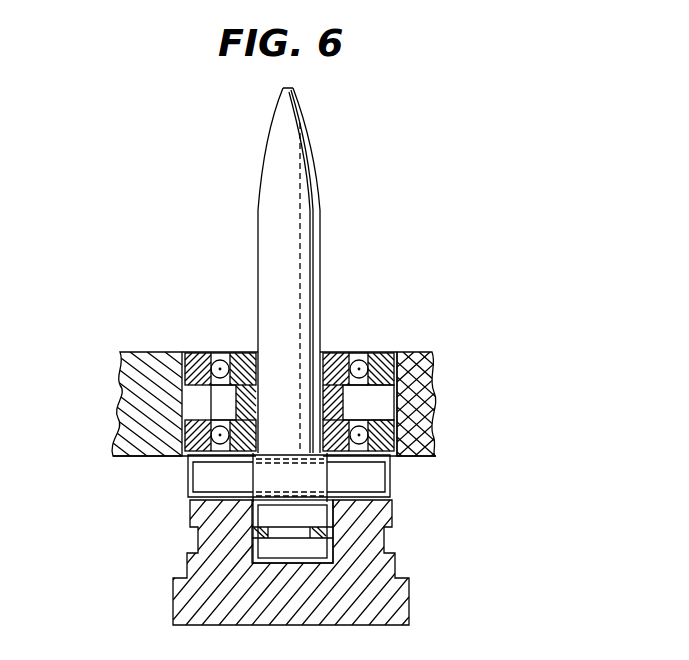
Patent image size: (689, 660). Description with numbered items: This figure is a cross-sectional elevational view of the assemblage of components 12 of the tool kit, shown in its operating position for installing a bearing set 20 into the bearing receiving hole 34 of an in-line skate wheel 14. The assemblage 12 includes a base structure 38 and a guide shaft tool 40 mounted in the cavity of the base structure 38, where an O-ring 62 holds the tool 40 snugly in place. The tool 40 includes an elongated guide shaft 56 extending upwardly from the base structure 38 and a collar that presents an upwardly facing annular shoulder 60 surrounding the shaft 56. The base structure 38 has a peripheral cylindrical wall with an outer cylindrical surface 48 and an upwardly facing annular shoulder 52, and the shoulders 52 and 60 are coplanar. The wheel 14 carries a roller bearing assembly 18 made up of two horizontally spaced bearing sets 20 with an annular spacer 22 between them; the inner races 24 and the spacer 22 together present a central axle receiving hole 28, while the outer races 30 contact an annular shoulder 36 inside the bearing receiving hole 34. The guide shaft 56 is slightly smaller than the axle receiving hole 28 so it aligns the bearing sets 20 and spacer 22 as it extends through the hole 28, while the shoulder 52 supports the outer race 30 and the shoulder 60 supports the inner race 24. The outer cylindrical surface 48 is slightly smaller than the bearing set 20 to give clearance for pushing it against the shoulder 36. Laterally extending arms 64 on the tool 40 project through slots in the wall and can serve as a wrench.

The assemblage of components 12 is at (442, 500).
The wheel 14 is at (420, 386).
The roller bearing assembly 18 is at (195, 338).
The bearing sets 20 is at (160, 352).
The annular spacer 22 is at (333, 353).
The inner races 24 is at (393, 352).
The axle receiving hole 28 is at (268, 358).
The outer races 30 is at (400, 440).
The bearing receiving hole 34 is at (385, 350).
The annular shoulder 36 is at (395, 410).
The base structure 38 is at (395, 600).
The guide shaft tool 40 is at (320, 256).
The outer cylindrical surface 48 is at (166, 470).
The annular shoulder 52 is at (395, 464).
The guide shaft 56 is at (277, 208).
The annular shoulder 60 is at (423, 358).
The O-ring 62 is at (333, 537).
The laterally extending arms 64 is at (207, 483).